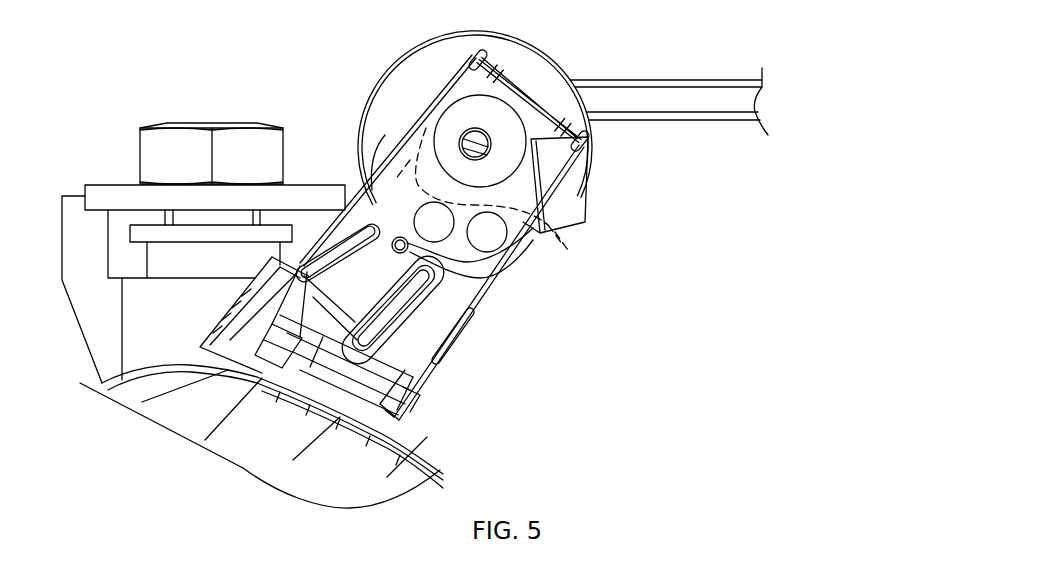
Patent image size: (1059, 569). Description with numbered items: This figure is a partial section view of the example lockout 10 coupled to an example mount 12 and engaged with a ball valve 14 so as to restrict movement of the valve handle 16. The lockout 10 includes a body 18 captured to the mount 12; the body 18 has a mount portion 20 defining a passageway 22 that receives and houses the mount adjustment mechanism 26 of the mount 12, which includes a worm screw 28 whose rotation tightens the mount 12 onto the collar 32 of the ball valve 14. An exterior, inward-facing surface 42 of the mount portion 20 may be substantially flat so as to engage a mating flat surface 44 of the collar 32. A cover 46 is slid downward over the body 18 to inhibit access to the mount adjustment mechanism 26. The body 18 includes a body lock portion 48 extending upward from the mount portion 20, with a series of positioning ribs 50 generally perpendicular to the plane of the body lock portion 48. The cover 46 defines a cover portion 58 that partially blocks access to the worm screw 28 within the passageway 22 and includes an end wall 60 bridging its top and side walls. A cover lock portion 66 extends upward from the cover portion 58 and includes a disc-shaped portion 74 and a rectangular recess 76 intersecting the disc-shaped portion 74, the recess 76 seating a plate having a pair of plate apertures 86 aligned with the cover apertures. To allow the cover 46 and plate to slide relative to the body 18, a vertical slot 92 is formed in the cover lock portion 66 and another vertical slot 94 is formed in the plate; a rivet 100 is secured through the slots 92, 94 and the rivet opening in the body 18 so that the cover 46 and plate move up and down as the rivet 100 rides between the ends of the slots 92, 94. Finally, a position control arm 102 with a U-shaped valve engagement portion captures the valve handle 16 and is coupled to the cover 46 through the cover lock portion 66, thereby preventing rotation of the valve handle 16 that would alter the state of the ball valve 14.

The lockout 10 is at (372, 32).
The mount 12 is at (142, 368).
The ball valve 14 is at (133, 146).
The valve handle 16 is at (663, 80).
The body 18 is at (367, 447).
The mount portion 20 is at (273, 270).
The passageway 22 is at (262, 300).
The mount adjustment mechanism 26 is at (252, 358).
The worm screw 28 is at (290, 375).
The collar 32 is at (333, 490).
The inward-facing surface 42 is at (292, 368).
The flat surface 44 is at (410, 440).
The cover 46 is at (372, 77).
The body lock portion 48 is at (473, 333).
The positioning ribs 50 is at (340, 258).
The cover portion 58 is at (216, 330).
The end wall 60 is at (207, 343).
The cover lock portion 66 is at (345, 196).
The disc-shaped portion 74 is at (450, 32).
The rectangular recess 76 is at (500, 86).
The plate apertures 86 is at (483, 265).
The vertical slot 92 is at (385, 135).
The vertical slot 94 is at (482, 176).
The rivet 100 is at (480, 283).
The position control arm 102 is at (493, 130).